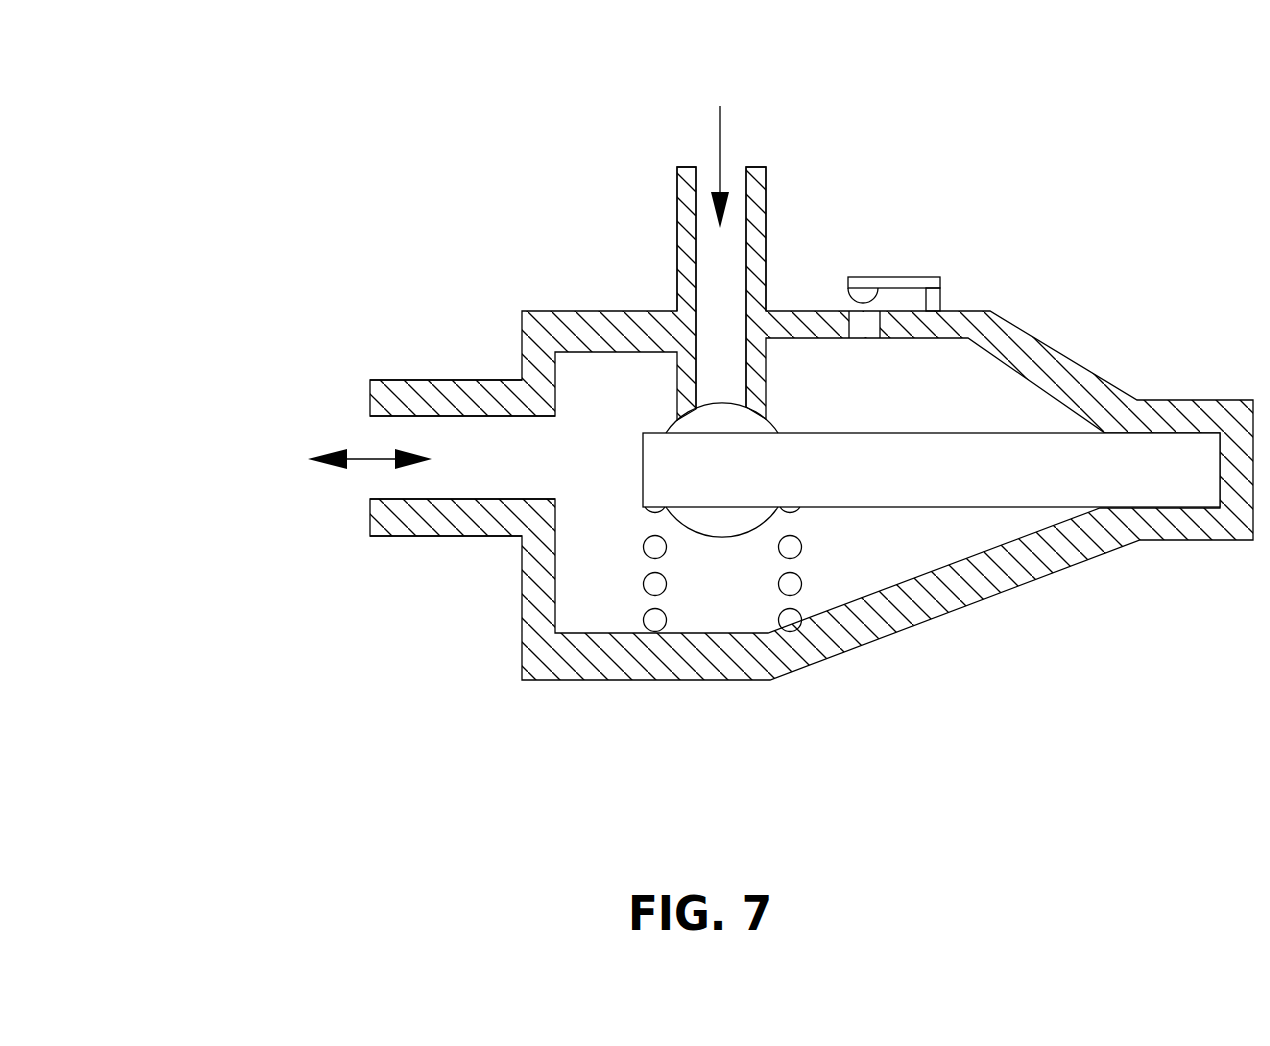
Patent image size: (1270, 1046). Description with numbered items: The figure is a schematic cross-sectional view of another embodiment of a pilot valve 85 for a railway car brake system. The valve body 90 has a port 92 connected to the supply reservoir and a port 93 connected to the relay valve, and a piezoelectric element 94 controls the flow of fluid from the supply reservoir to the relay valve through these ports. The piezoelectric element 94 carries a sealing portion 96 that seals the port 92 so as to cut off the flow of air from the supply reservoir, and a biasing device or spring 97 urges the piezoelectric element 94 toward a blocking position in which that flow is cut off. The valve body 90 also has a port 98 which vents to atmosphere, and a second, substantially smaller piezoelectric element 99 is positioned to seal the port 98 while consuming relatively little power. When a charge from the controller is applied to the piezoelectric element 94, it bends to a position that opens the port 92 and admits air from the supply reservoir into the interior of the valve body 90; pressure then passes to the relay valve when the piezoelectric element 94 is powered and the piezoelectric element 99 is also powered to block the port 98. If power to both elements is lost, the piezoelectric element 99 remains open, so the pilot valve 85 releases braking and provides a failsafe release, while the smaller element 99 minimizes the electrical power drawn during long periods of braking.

The pilot valve 85 is at (448, 247).
The valve body 90 is at (522, 611).
The port 92 is at (677, 189).
The port 93 is at (395, 380).
The piezoelectric element 94 is at (1107, 482).
The sealing portion 96 is at (742, 427).
The spring 97 is at (801, 582).
The port 98 is at (878, 361).
The piezoelectric element 99 is at (908, 277).